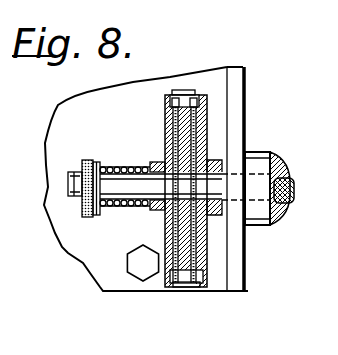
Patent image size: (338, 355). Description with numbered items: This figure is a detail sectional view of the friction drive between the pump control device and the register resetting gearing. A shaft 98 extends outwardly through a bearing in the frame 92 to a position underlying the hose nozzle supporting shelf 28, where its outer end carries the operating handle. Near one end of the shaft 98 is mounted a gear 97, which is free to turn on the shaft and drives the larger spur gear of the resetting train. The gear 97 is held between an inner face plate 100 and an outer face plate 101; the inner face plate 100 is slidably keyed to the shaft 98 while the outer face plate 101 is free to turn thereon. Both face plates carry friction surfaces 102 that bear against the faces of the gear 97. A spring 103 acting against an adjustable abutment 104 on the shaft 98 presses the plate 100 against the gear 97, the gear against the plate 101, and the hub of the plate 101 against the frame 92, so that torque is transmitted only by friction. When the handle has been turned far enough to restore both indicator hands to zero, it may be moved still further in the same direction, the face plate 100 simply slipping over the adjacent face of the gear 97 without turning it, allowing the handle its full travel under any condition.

The hose nozzle supporting shelf 28 is at (268, 226).
The frame 92 is at (244, 79).
The gear 97 is at (187, 92).
The shaft 98 is at (296, 188).
The inner face plate 100 is at (157, 292).
The outer face plate 101 is at (208, 292).
The friction surfaces 102 is at (165, 229).
The spring 103 is at (120, 168).
The adjustable abutment 104 is at (84, 160).